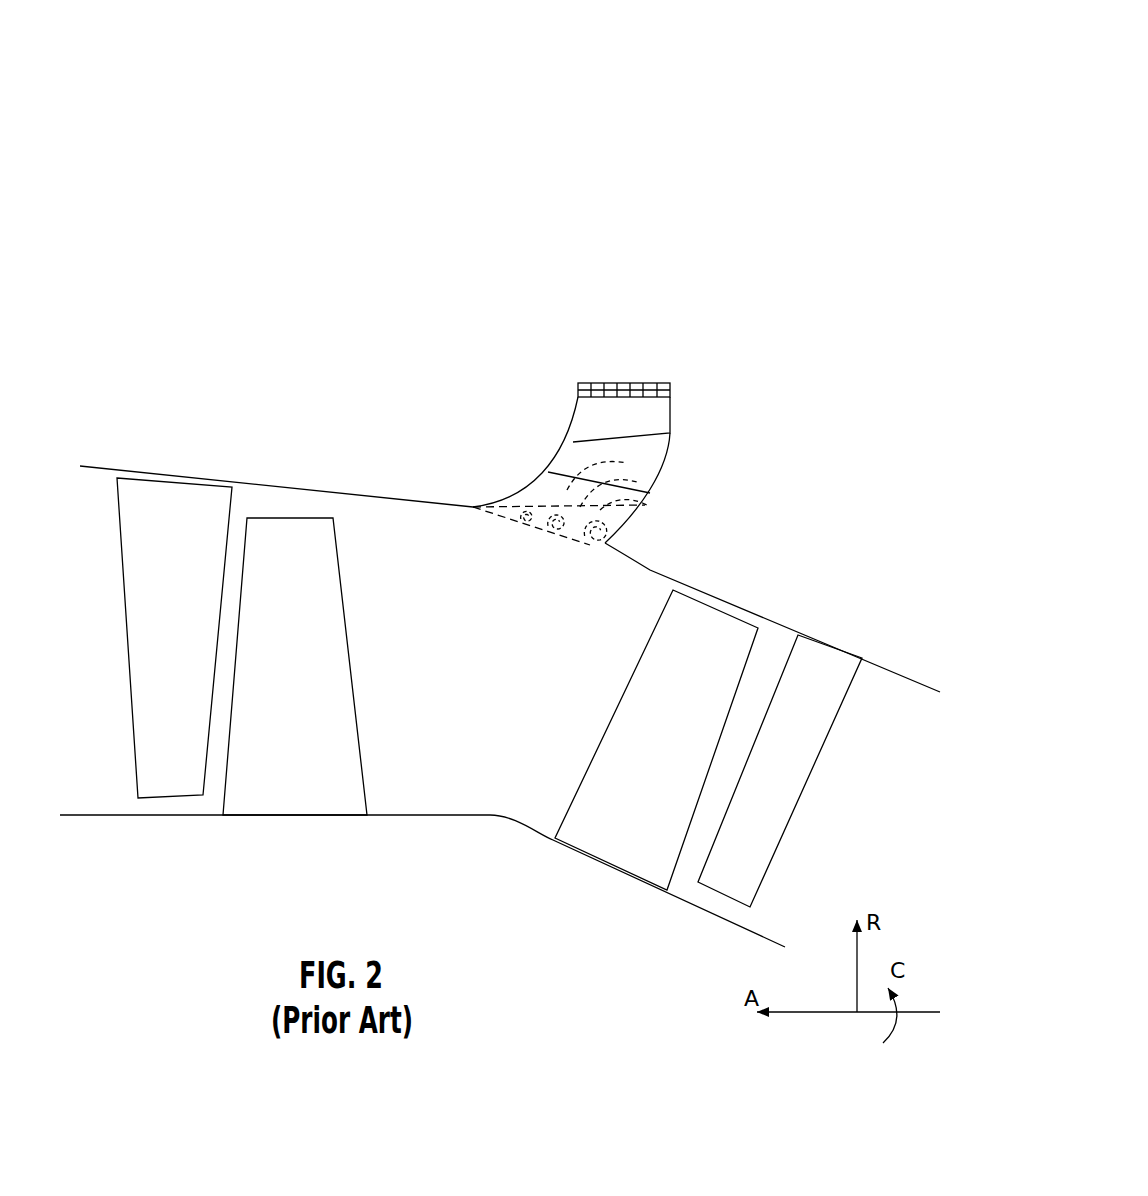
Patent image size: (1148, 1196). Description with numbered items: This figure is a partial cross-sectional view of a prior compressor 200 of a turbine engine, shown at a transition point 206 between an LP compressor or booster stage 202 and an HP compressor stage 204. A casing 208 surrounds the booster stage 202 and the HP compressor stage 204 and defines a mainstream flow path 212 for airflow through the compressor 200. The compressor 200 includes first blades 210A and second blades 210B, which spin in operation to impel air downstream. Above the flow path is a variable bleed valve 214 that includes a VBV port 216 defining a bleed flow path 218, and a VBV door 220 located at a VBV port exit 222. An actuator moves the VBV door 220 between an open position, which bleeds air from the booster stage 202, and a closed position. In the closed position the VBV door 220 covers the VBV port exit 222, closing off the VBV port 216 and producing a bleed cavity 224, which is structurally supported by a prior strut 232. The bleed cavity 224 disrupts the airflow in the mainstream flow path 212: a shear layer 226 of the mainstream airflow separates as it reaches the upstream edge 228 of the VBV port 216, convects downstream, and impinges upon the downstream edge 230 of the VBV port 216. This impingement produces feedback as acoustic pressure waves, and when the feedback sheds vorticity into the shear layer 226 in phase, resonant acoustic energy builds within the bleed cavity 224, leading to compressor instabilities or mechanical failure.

The compressor 200 is at (758, 70).
The LP compressor stage 202 is at (192, 375).
The HP compressor stage 204 is at (835, 498).
The transition point 206 is at (750, 467).
The casing 208 is at (295, 490).
The first blades 210A is at (292, 792).
The second blades 210B is at (612, 855).
The mainstream flow path 212 is at (560, 735).
The variable bleed valve 214 is at (675, 278).
The VBV port 216 is at (680, 398).
The bleed flow path 218 is at (508, 550).
The VBV door 220 is at (622, 383).
The VBV port exit 222 is at (583, 398).
The bleed cavity 224 is at (656, 425).
The shear layer 226 is at (630, 520).
The upstream edge 228 is at (475, 507).
The downstream edge 230 is at (605, 550).
The strut 232 is at (667, 437).